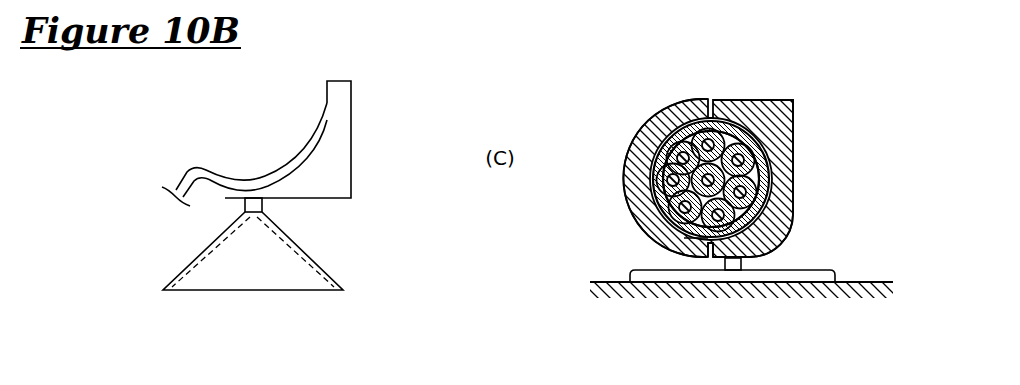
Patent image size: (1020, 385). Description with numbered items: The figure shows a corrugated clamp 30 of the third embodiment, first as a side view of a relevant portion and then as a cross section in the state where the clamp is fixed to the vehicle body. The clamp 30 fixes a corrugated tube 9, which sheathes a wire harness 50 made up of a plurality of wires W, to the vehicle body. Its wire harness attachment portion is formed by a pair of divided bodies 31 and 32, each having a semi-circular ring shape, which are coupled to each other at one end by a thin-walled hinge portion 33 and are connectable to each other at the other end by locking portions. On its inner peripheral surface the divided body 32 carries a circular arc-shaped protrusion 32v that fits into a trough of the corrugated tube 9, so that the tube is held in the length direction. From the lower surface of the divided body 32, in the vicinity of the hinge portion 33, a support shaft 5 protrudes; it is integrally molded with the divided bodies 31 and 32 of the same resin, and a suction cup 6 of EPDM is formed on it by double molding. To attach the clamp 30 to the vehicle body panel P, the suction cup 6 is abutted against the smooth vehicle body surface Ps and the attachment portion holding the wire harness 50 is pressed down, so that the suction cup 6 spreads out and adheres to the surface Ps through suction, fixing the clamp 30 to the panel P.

In FIG. 10B, the divided body 31 is at (366, 10).
In FIG. 10C, the divided body 31 is at (623, 175).
In FIG. 10B, the divided body 32 is at (351, 127).
In FIG. 10C, the divided body 32 is at (782, 200).
In FIG. 10B, the circular arc-shaped protrusion 32v is at (290, 158).
In FIG. 10B, the support shaft 5 is at (258, 203).
In FIG. 10C, the support shaft 5 is at (732, 268).
In FIG. 10B, the suction cup 6 is at (323, 268).
In FIG. 10C, the suction cup 6 is at (782, 277).
In FIG. 10C, the corrugated clamp 30 is at (805, 114).
In FIG. 10C, the thin-walled hinge portion 33 is at (695, 231).
In FIG. 10C, the corrugated tube 9 is at (773, 170).
In FIG. 10C, the wires W is at (700, 127).
In FIG. 10C, the wire harness 50 is at (728, 133).
In FIG. 10C, the vehicle body panel P is at (682, 292).
In FIG. 10C, the vehicle body surface Ps is at (877, 282).